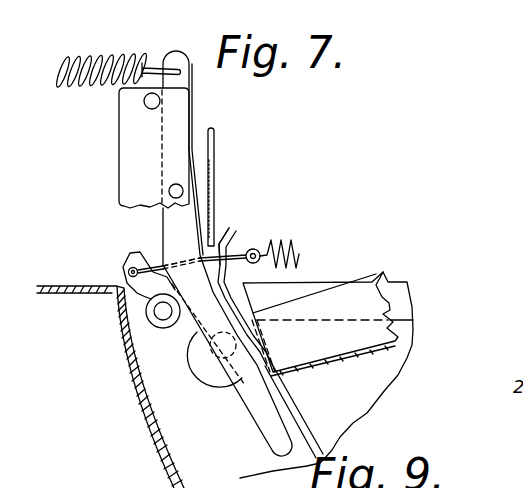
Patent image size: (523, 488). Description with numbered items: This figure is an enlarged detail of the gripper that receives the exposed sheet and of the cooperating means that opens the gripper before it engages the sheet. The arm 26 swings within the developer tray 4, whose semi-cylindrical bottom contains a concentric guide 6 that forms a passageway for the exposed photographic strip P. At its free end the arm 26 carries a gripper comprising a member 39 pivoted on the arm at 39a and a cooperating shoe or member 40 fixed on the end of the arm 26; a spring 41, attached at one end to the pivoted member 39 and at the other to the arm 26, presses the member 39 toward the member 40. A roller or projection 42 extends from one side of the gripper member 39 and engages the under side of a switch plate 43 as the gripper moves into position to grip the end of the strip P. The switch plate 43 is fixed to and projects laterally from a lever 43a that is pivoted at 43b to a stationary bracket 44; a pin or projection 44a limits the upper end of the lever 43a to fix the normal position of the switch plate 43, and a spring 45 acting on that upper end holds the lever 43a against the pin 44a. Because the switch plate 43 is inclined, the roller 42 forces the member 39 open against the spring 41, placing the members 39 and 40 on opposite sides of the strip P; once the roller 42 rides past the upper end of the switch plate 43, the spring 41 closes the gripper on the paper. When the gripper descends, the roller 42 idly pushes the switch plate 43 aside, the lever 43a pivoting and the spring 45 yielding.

The developer tray 4 is at (162, 458).
The guide 6 is at (308, 426).
The arm 26 is at (377, 272).
The gripper member 39 is at (204, 338).
The pivot 39a is at (219, 362).
The shoe or member 40 is at (234, 238).
The spring 41 is at (297, 239).
The roller or projection 42 is at (148, 326).
The switch plate 43 is at (183, 325).
The lever 43a is at (176, 244).
The pivot 43b is at (217, 187).
The stationary support or bracket 44 is at (133, 157).
The pin or projection 44a is at (145, 103).
The spring 45 is at (128, 60).
The photographic strip P is at (215, 152).